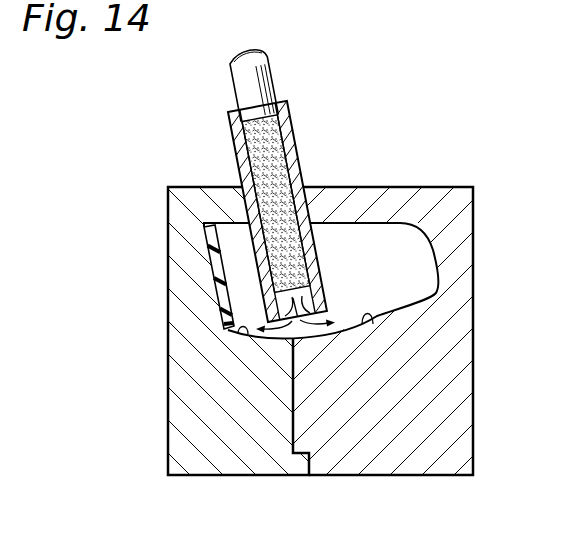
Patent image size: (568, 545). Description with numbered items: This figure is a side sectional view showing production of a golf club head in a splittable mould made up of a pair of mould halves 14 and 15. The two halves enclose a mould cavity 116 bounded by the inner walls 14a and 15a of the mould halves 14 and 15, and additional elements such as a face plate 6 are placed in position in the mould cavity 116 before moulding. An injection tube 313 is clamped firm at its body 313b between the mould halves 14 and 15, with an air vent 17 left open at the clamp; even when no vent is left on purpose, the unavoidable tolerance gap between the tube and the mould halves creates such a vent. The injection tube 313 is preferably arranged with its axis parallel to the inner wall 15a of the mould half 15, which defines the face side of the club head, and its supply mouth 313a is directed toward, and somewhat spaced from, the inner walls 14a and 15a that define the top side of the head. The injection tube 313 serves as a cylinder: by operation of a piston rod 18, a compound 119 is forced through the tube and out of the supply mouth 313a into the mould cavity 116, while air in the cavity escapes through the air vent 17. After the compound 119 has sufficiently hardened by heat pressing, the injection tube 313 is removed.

The mould half 14 is at (467, 352).
The mould half 15 is at (180, 406).
The inner wall of mould half 14a is at (373, 324).
The inner wall of mould half 15a is at (248, 334).
The mould cavity 116 is at (400, 257).
The face plate 6 is at (212, 253).
The injection tube 313 is at (271, 208).
The supply mouth 313a is at (262, 300).
The body of injection tube 313b is at (240, 162).
The air vent 17 is at (298, 181).
The compound 119 is at (290, 141).
The piston rod 18 is at (242, 88).